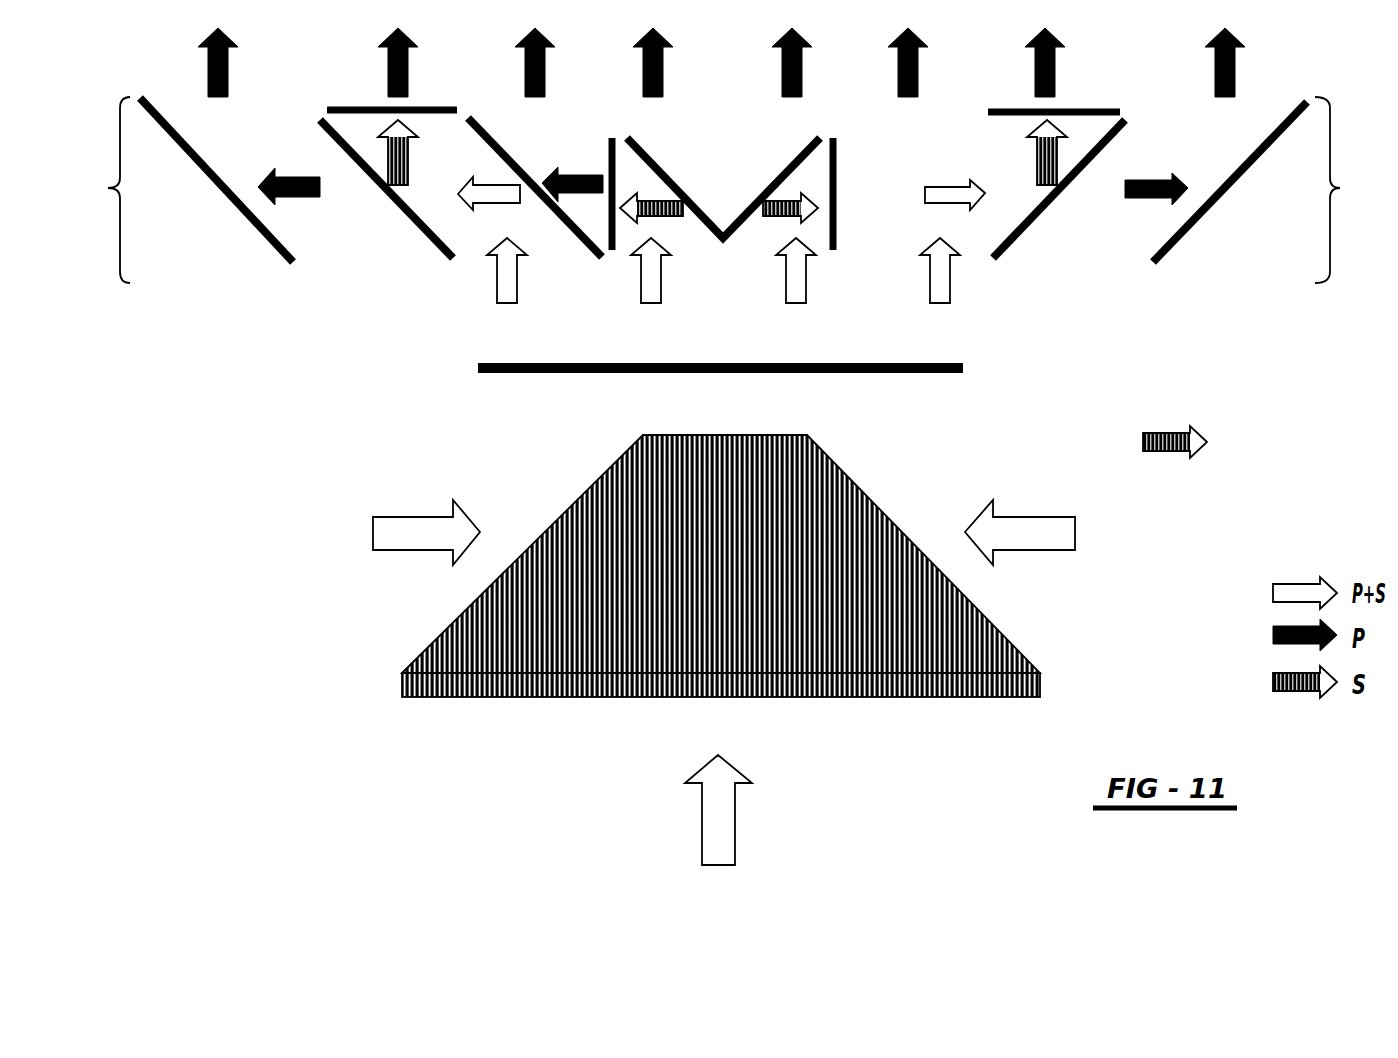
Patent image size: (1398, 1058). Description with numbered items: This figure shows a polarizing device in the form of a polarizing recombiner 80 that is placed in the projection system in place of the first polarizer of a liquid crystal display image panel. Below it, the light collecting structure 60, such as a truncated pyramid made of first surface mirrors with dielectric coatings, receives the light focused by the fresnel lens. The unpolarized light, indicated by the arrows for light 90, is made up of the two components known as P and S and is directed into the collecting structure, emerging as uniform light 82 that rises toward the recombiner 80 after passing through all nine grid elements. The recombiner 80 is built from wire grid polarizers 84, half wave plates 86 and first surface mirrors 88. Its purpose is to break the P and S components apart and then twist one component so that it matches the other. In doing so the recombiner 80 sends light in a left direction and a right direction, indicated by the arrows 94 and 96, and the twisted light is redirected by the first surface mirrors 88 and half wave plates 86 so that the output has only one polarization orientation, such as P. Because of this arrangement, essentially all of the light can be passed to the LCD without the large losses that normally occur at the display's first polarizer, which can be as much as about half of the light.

The light collecting structure 60 is at (402, 685).
The polarizing recombiner 80 is at (724, 190).
The light 82 is at (517, 293).
The wire grid polarizer 84 is at (410, 212).
The half wave plate 86 is at (360, 108).
The first surface mirror 88 is at (212, 180).
The unpolarized light 90 is at (425, 515).
The leftward light 94 is at (670, 220).
The rightward light 96 is at (742, 222).